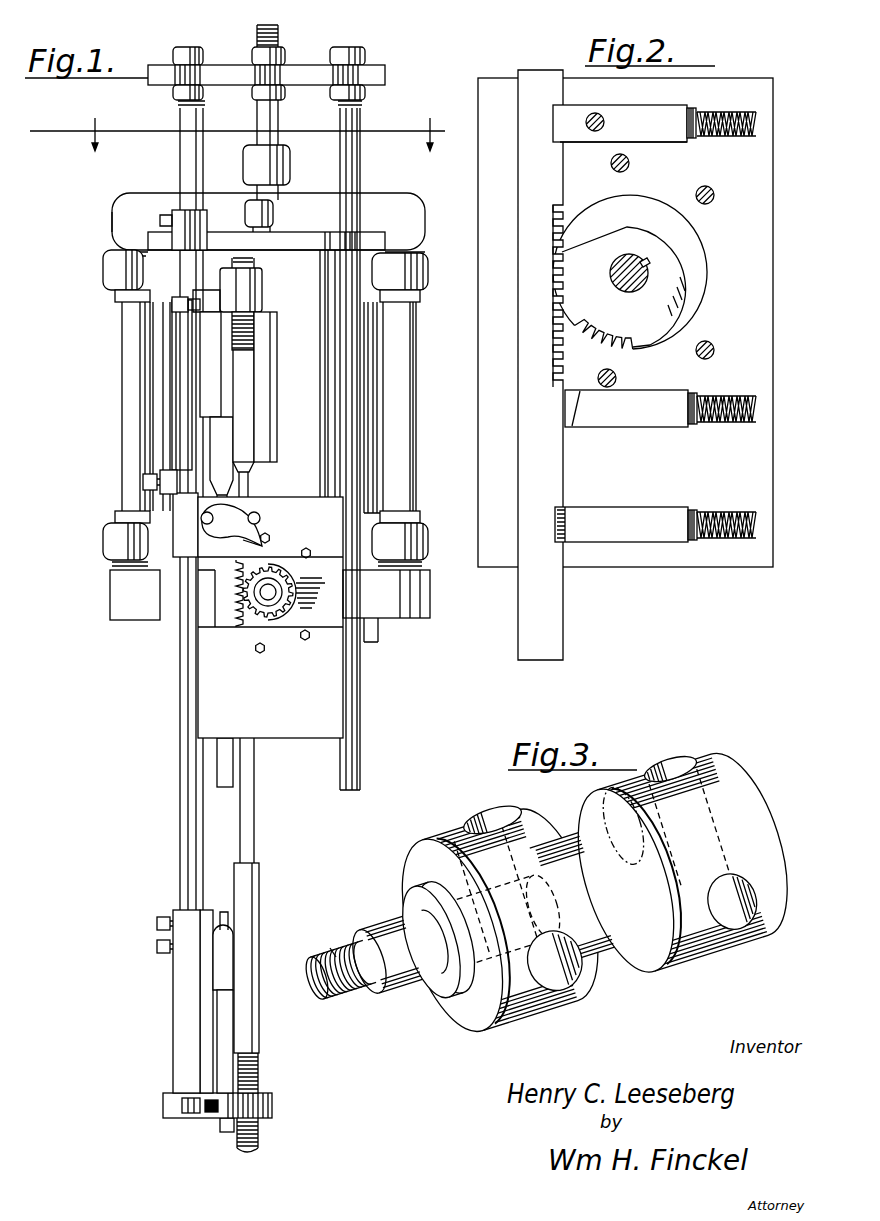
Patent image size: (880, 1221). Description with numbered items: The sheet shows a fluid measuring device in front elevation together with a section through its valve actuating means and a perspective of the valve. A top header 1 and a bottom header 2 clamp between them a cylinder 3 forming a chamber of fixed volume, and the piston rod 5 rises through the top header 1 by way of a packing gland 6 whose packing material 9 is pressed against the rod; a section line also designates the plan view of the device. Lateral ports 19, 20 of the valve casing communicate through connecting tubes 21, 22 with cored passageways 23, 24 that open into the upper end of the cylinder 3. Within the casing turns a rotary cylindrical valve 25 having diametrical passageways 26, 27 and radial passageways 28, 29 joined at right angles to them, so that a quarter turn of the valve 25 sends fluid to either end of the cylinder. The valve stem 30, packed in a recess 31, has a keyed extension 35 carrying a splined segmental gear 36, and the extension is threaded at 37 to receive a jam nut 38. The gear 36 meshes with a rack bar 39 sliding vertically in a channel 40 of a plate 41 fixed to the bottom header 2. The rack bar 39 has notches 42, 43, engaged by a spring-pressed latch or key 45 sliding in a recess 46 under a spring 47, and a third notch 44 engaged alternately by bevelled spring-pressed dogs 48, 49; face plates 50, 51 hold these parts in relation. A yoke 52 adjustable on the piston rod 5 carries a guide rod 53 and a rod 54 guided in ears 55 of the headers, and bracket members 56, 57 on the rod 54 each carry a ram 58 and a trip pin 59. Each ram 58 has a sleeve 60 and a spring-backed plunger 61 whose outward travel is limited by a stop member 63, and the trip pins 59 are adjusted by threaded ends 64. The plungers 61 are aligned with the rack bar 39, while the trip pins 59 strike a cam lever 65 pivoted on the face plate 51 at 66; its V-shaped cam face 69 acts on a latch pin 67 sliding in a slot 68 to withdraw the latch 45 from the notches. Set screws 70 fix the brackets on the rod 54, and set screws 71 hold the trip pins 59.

In FIG. 1, the top header 1 is at (326, 238).
In FIG. 1, the bottom header 2 is at (152, 528).
In FIG. 1, the cylinder 3 is at (333, 480).
In FIG. 1, the piston rod 5 is at (279, 121).
In FIG. 1, the packing gland 6 is at (288, 172).
In FIG. 1, the packing material 9 is at (246, 133).
In FIG. 1, the lateral port 19 is at (362, 613).
In FIG. 1, the lateral port 20 is at (140, 616).
In FIG. 1, the connecting tube 21 is at (408, 457).
In FIG. 1, the connecting tube 22 is at (130, 437).
In FIG. 1, the cored passageway 23 is at (392, 206).
In FIG. 1, the cored passageway 24 is at (150, 175).
In FIG. 3, the rotary cylindrical valve 25 is at (585, 992).
In FIG. 3, the diametrical passageway 26 is at (737, 917).
In FIG. 3, the diametrical passageway 27 is at (495, 821).
In FIG. 3, the radial passageway 28 is at (662, 771).
In FIG. 3, the radial passageway 29 is at (557, 982).
In FIG. 3, the stem 30 is at (400, 981).
In FIG. 3, the recess 31 is at (438, 995).
In FIG. 1, the keyed extension 35 is at (275, 604).
In FIG. 2, the keyed extension 35 is at (648, 273).
In FIG. 3, the keyed extension 35 is at (350, 984).
In FIG. 1, the segmental gear 36 is at (268, 618).
In FIG. 2, the segmental gear 36 is at (655, 303).
In FIG. 3, the thread 37 is at (318, 940).
In FIG. 1, the jam nut 38 is at (276, 592).
In FIG. 1, the rack bar 39 is at (237, 620).
In FIG. 2, the rack bar 39 is at (563, 608).
In FIG. 2, the guide recess or channel 40 is at (565, 463).
In FIG. 2, the plate 41 is at (733, 560).
In FIG. 2, the notch 42 is at (553, 116).
In FIG. 2, the notch 43 is at (553, 246).
In FIG. 2, the notch 44 is at (555, 540).
In FIG. 2, the latch or key 45 is at (670, 134).
In FIG. 2, the recess 46 is at (692, 138).
In FIG. 2, the spring 47 is at (695, 113).
In FIG. 2, the spring-pressed dog 48 is at (655, 524).
In FIG. 2, the spring-pressed dog 49 is at (660, 408).
In FIG. 1, the face plate 50 is at (318, 736).
In FIG. 1, the face plate 51 is at (293, 503).
In FIG. 1, the yoke 52 is at (296, 70).
In FIG. 1, the guide rod 53 is at (360, 691).
In FIG. 1, the rod 54 is at (182, 829).
In FIG. 1, the ears 55 is at (362, 593).
In FIG. 1, the bracket member 56 is at (183, 1078).
In FIG. 1, the bracket member 57 is at (185, 402).
In FIG. 1, the ram 58 is at (213, 1021).
In FIG. 1, the trip pin 59 is at (259, 886).
In FIG. 1, the sleeve 60 is at (220, 1051).
In FIG. 1, the plunger 61 is at (222, 974).
In FIG. 1, the stop member 63 is at (222, 1122).
In FIG. 1, the threaded end 64 is at (258, 1071).
In FIG. 1, the cam lever 65 is at (232, 525).
In FIG. 1, the pivot 66 is at (231, 544).
In FIG. 1, the latch pin 67 is at (262, 520).
In FIG. 2, the latch pin 67 is at (595, 132).
In FIG. 1, the slot 68 is at (286, 541).
In FIG. 1, the V-shaped cam face 69 is at (243, 540).
In FIG. 1, the set screw 70 is at (157, 946).
In FIG. 1, the set screw 71 is at (182, 1106).